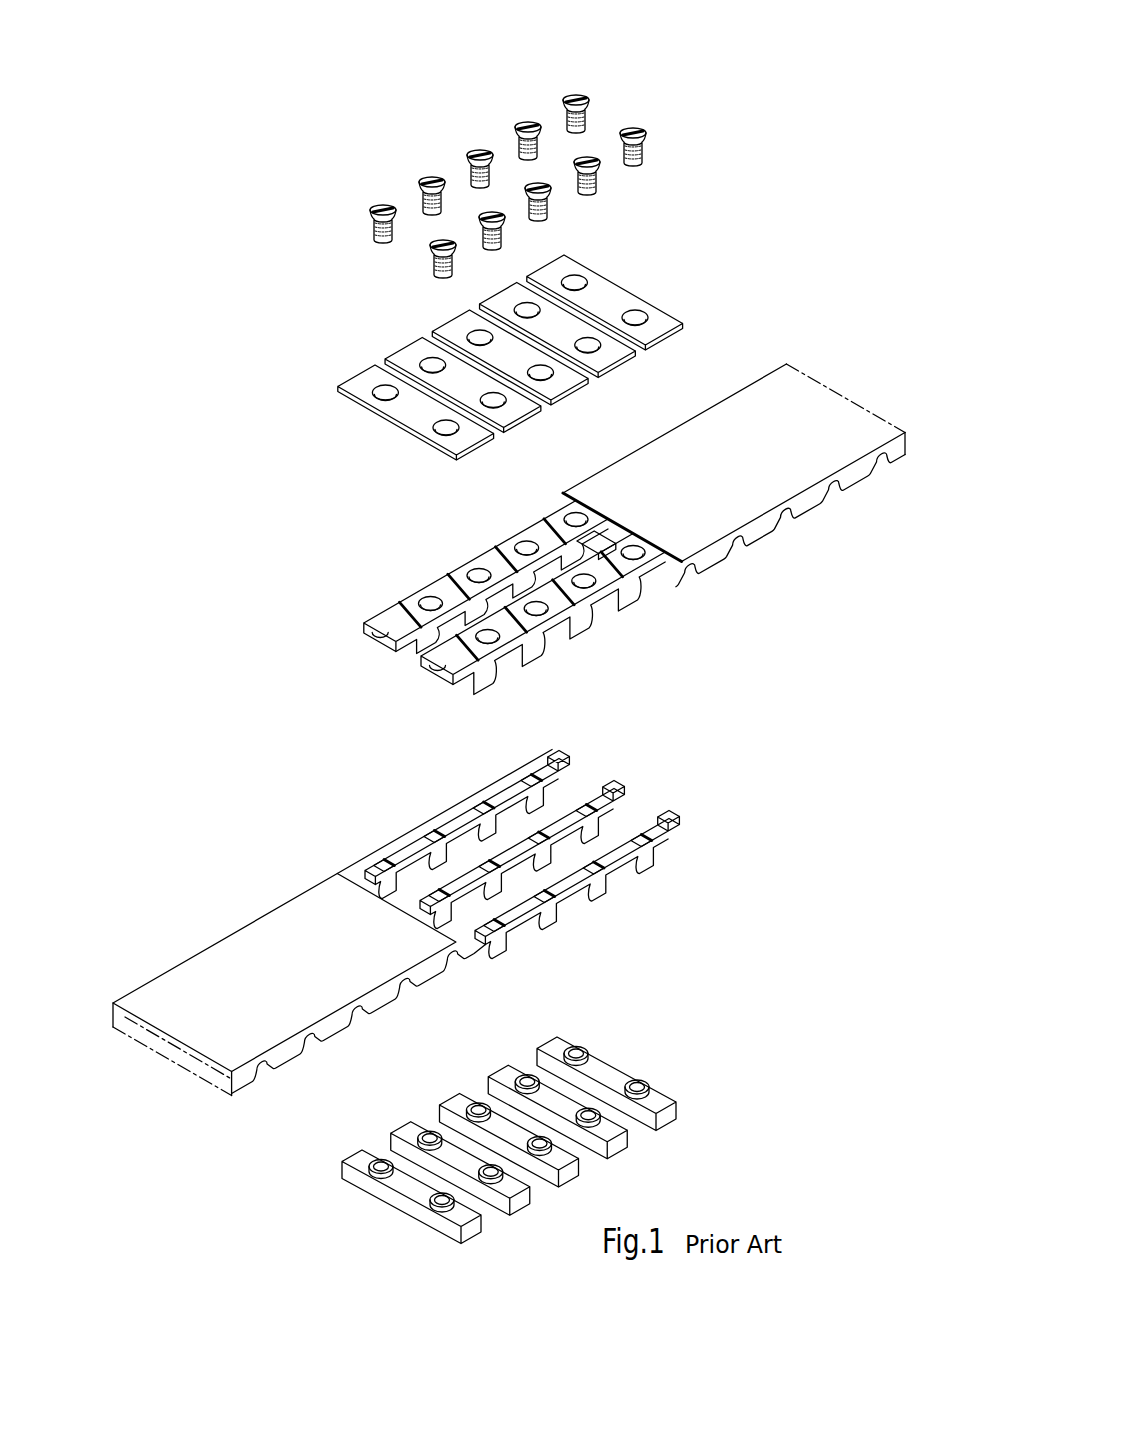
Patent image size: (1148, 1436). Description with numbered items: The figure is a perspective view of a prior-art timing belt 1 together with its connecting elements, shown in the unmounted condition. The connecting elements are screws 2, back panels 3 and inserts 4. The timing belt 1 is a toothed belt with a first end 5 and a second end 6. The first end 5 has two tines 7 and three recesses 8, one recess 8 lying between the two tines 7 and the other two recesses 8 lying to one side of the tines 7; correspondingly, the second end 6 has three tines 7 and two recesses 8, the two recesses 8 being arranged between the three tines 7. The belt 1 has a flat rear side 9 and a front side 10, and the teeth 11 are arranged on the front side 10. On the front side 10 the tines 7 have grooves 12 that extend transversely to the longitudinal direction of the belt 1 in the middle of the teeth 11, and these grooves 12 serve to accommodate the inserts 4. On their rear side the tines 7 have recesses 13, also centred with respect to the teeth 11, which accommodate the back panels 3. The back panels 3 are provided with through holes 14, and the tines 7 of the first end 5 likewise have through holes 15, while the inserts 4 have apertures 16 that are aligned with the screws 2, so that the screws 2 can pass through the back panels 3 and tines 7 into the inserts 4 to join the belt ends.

The timing belt 1 is at (509, 715).
The screws 2 is at (600, 83).
The back panels 3 is at (521, 341).
The inserts 4 is at (521, 1126).
The first end 5 is at (372, 585).
The second end 6 is at (631, 889).
The tines 7 is at (522, 708).
The recesses 8 is at (592, 603).
The rear side 9 is at (752, 395).
The front side 10 is at (796, 539).
The teeth 11 is at (856, 484).
The grooves 12 is at (600, 612).
The recesses 13 is at (418, 597).
The through holes 14 is at (635, 314).
The through holes 15 is at (634, 546).
The apertures 16 is at (635, 1081).